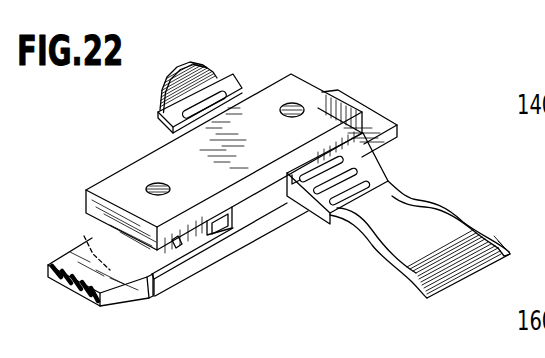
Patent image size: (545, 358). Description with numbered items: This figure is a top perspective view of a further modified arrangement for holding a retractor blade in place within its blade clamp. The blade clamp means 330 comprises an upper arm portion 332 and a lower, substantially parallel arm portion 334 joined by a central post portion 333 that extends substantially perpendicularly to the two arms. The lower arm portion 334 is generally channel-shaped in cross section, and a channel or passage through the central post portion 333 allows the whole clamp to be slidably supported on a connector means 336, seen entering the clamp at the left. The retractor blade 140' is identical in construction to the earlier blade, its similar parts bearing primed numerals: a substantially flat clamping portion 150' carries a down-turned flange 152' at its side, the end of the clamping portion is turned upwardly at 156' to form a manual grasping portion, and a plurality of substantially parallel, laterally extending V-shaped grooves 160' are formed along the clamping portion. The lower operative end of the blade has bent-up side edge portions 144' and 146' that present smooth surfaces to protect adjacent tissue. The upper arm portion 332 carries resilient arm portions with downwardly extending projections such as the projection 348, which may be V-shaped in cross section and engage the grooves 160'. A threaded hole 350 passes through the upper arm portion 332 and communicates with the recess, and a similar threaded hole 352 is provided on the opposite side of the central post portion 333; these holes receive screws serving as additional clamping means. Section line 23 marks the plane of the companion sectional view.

The section line 23- 23 is at (243, 78).
The retractor blade 140' is at (448, 218).
The side edge portion 144' is at (420, 253).
The side edge portion 146' is at (499, 215).
The clamping portion 150' is at (218, 72).
The down-turned flange 152' is at (176, 105).
The manual grasping portion 156' is at (188, 64).
The grooves 160' is at (351, 192).
The blade clamp means 330 is at (218, 276).
The upper arm portion 332 is at (118, 174).
The central post portion 333 is at (264, 224).
The lower arm portion 334 is at (172, 284).
The connector means 336 is at (106, 307).
The downwardly extending projection 348 is at (297, 204).
The threaded hole 350 is at (319, 134).
The threaded hole 352 is at (172, 175).